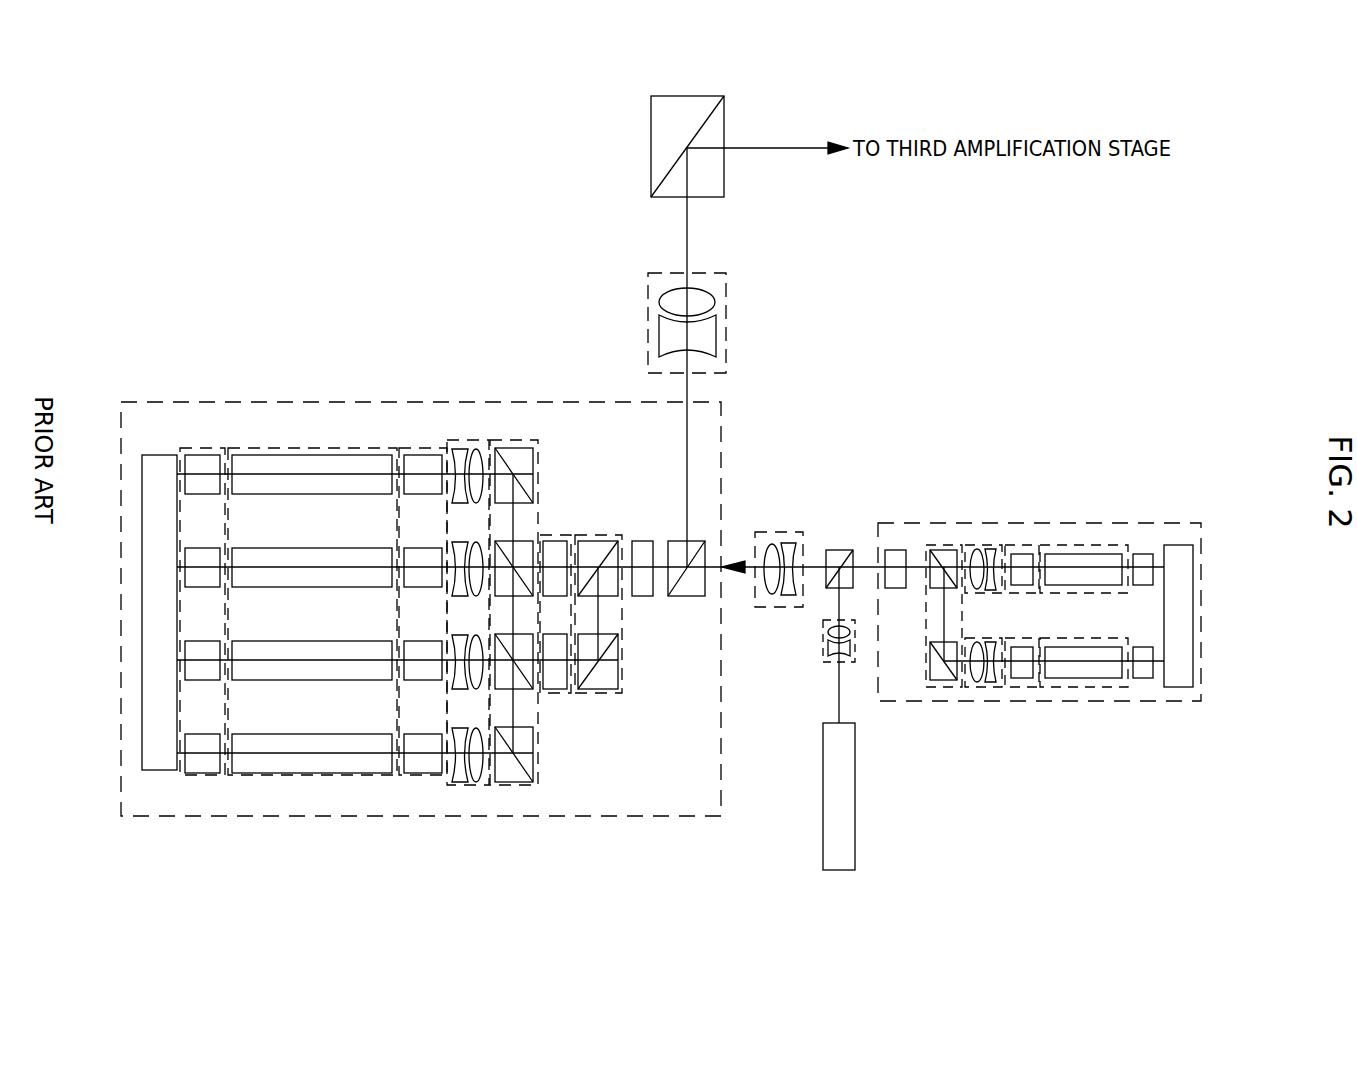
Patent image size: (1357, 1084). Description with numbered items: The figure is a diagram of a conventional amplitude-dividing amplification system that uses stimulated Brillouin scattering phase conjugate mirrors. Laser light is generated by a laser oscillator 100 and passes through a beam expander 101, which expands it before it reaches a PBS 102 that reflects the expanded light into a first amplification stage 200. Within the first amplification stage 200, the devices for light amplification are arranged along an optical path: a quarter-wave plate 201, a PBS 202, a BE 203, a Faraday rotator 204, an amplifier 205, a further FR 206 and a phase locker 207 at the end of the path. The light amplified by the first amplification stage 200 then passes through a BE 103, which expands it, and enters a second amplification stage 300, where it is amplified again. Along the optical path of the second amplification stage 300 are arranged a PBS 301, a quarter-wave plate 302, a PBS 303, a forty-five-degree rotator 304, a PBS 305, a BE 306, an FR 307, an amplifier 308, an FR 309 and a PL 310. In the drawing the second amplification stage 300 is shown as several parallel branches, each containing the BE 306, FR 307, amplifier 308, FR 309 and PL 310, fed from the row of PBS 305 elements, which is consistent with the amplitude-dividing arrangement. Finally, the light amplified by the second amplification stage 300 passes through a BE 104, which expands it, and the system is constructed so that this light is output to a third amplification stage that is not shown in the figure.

The laser oscillator 100 is at (855, 797).
The beam expander 101 is at (822, 641).
The PBS 102 is at (838, 550).
The BE 103 is at (777, 532).
The BE 104 is at (727, 318).
The first amplification stage 200 is at (1040, 701).
The quarter-wave plate 201 is at (895, 588).
The PBS 202 is at (942, 548).
The BE 203 is at (985, 545).
The Faraday Rotator 204 is at (1022, 545).
The amplifier 205 is at (1082, 545).
The FR 206 is at (1143, 554).
The Phase Locker 207 is at (1180, 545).
The second amplification stage 300 is at (596, 402).
The PBS 301 is at (690, 596).
The quarter-wave plate 302 is at (641, 541).
The PBS 303 is at (597, 541).
The 45-degree rotator 304 is at (555, 536).
The PBS 305 is at (513, 448).
The BE 306 is at (466, 440).
The FR 307 is at (418, 450).
The amplifier 308 is at (310, 448).
The FR 309 is at (200, 448).
The PL 310 is at (155, 455).